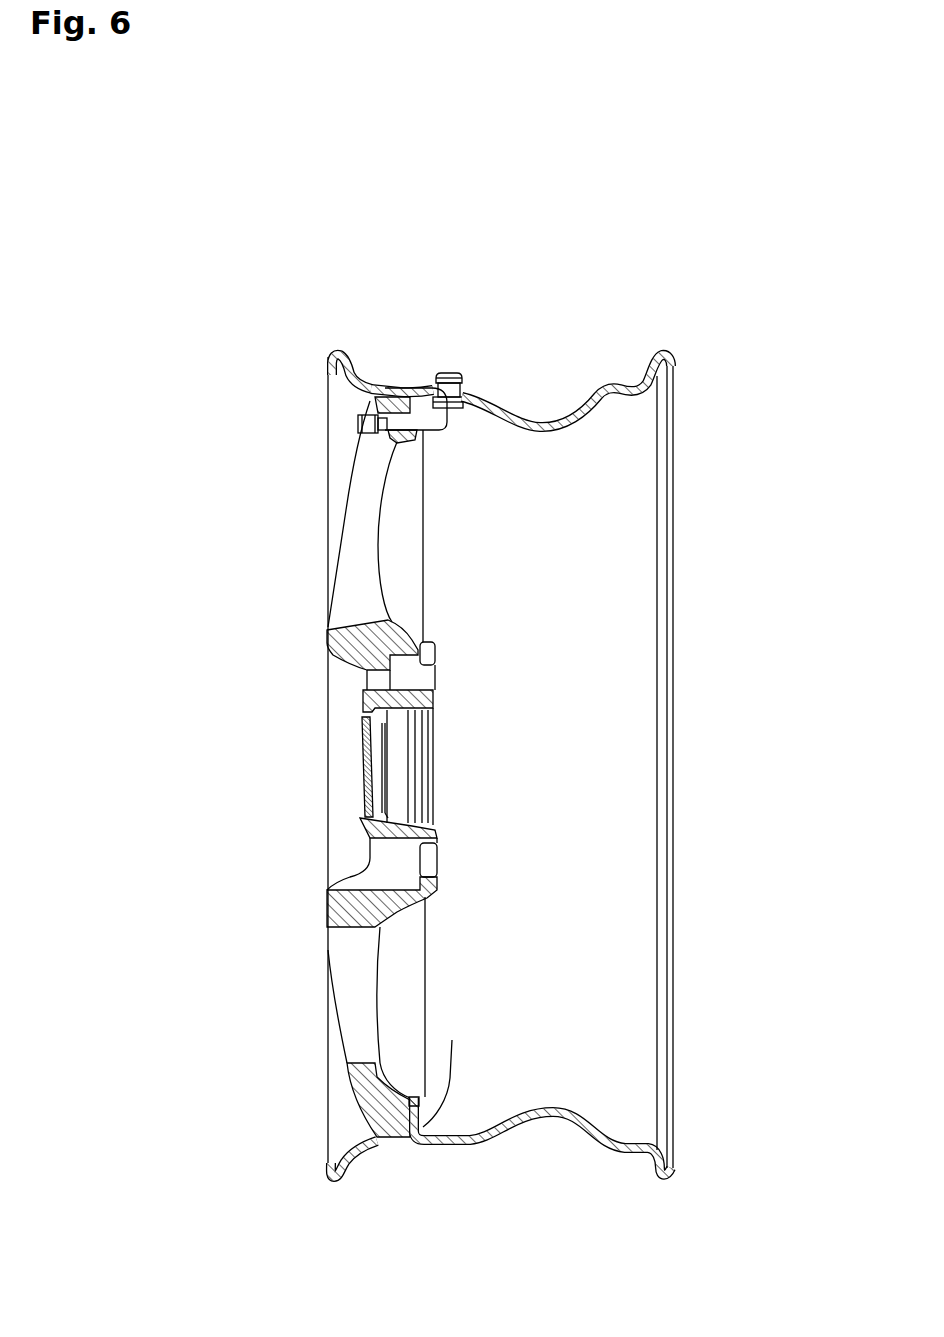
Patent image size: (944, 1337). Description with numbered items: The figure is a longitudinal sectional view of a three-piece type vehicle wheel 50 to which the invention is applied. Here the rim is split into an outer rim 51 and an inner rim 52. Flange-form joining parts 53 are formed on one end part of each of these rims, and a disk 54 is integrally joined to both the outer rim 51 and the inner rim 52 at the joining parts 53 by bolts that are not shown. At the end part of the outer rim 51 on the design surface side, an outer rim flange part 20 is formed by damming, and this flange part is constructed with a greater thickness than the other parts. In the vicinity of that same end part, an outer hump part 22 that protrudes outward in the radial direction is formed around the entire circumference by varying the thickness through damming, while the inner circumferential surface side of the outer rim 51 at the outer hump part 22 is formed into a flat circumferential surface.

The vehicle wheel 50 is at (718, 328).
The outer rim 51 is at (345, 340).
The inner rim 52 is at (613, 363).
The joining parts 53 is at (420, 1097).
The disk 54 is at (330, 532).
The outer rim flange part 20 is at (332, 352).
The outer hump part 22 is at (378, 372).